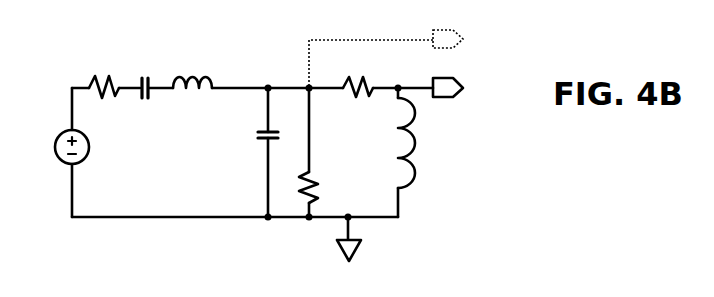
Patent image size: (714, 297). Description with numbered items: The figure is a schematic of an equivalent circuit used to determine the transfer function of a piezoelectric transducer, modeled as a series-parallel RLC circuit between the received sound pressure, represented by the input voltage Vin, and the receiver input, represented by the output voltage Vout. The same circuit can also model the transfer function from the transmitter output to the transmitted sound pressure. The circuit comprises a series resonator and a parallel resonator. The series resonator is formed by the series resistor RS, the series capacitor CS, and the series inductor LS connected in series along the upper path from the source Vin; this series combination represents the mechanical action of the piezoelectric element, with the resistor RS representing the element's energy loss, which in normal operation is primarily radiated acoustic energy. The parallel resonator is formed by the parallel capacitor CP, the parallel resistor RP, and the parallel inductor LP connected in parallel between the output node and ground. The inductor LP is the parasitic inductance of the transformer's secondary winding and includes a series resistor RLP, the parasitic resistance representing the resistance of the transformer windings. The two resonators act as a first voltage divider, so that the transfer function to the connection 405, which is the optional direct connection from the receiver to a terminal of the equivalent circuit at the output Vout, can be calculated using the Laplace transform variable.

The direct connection 405 is at (350, 40).
The received sound pressure input voltage Vin is at (59, 132).
The series resistor RS is at (107, 103).
The series capacitor CS is at (155, 105).
The series inductor LS is at (194, 102).
The parallel capacitor CP is at (255, 122).
The parallel resistor RP is at (324, 174).
The parasitic resistance RLP is at (358, 102).
The parasitic inductance LP is at (392, 145).
The receiver input voltage Vout is at (470, 75).